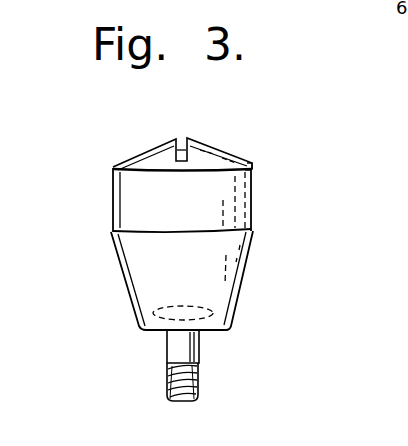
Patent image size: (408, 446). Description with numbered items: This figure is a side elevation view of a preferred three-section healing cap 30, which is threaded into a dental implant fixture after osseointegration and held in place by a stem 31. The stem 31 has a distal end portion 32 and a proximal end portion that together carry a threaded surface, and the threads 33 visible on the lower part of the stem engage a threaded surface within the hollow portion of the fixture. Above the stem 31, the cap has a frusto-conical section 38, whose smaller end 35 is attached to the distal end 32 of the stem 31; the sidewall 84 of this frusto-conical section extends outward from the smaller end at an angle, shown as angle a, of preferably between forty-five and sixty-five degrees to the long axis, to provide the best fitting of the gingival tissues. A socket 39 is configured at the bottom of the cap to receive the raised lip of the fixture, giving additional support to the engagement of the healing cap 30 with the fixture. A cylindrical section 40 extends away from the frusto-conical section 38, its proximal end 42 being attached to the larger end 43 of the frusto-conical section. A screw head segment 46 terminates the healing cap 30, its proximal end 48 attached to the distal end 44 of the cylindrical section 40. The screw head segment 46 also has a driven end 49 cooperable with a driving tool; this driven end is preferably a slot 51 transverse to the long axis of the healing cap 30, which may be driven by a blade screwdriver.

The healing cap 30 is at (125, 143).
The stem 31 is at (199, 363).
The distal end portion of the stem 32 is at (200, 337).
The threads 33 is at (199, 393).
The smaller end of the frusto-conical section 35 is at (232, 318).
The frusto-conical section 38 is at (245, 258).
The socket 39 is at (133, 322).
The cylindrical section 40 is at (254, 193).
The proximal end of the cylindrical section 42 is at (254, 222).
The larger end of the frusto-conical section 43 is at (254, 238).
The distal end of the cylindrical section 44 is at (254, 170).
The screw head segment 46 is at (232, 158).
The proximal end of the screw head segment 48 is at (251, 164).
The driven end 49 is at (205, 145).
The slot 51 is at (180, 136).
The sidewall of the frusto-conical segment 84 is at (243, 271).